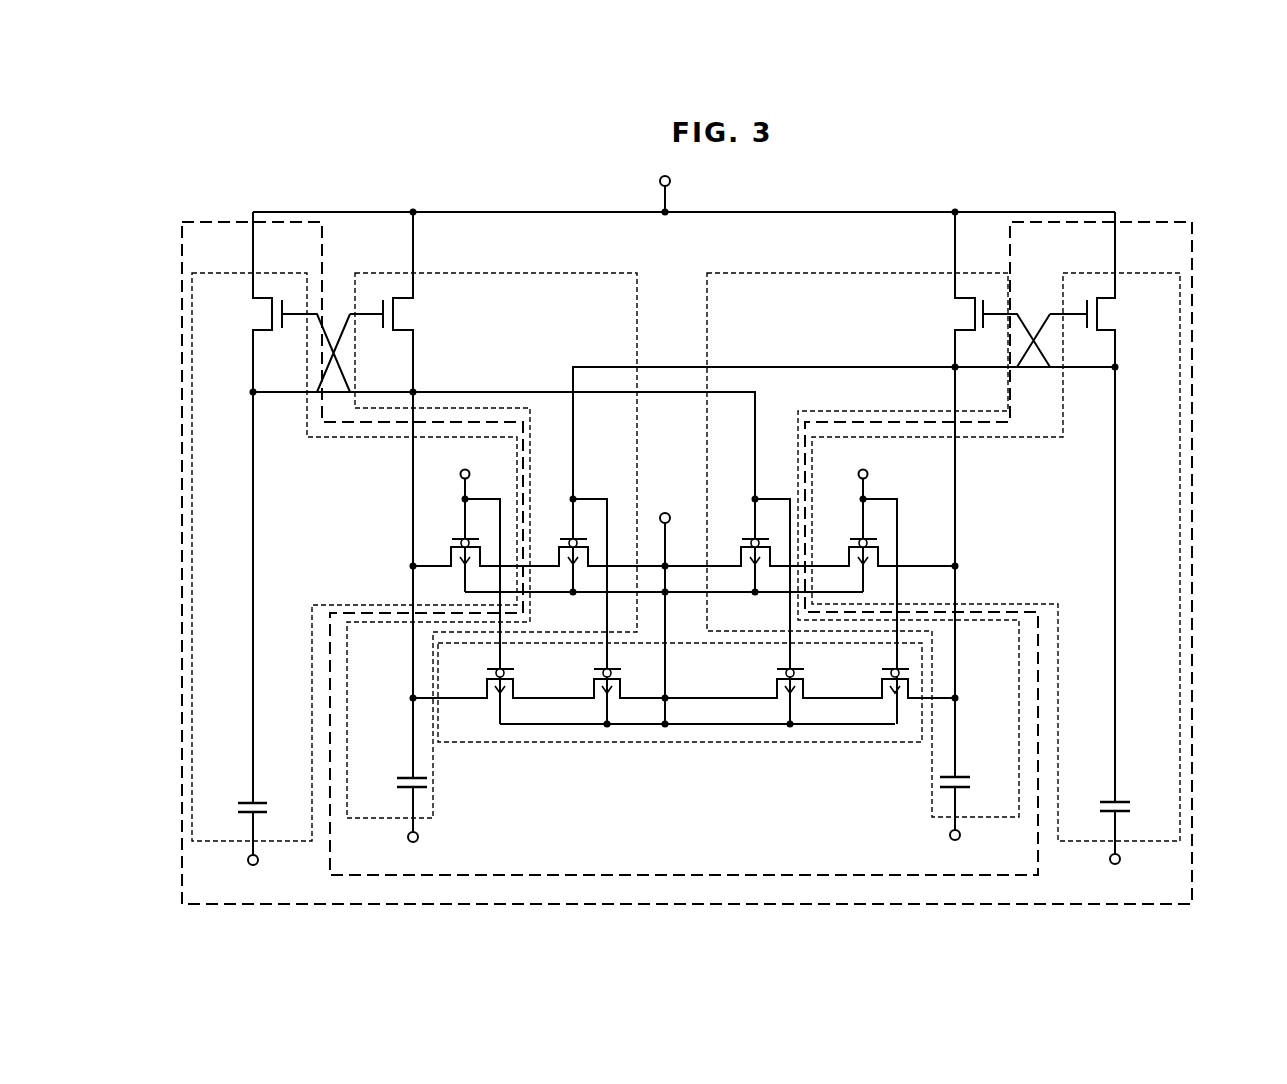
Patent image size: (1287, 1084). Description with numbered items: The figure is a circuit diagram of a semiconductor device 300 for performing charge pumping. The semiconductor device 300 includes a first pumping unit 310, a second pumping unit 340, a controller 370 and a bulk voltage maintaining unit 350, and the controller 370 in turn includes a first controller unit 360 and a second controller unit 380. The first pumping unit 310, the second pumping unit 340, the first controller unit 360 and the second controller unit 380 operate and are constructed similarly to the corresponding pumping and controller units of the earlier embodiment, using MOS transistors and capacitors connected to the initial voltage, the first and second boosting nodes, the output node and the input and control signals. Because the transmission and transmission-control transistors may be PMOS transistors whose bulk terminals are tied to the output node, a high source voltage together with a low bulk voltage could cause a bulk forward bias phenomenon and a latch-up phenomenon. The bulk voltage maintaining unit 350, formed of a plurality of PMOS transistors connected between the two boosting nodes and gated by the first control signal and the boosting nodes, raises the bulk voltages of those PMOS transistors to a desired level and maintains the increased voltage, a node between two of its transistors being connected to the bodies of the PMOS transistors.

The semiconductor device 300 is at (974, 176).
The first pumping unit 310 is at (495, 273).
The second pumping unit 340 is at (858, 273).
The bulk voltage maintaining unit 350 is at (682, 742).
The first controller unit 360 is at (223, 273).
The controller 370 is at (1192, 565).
The second controller unit 380 is at (1141, 273).